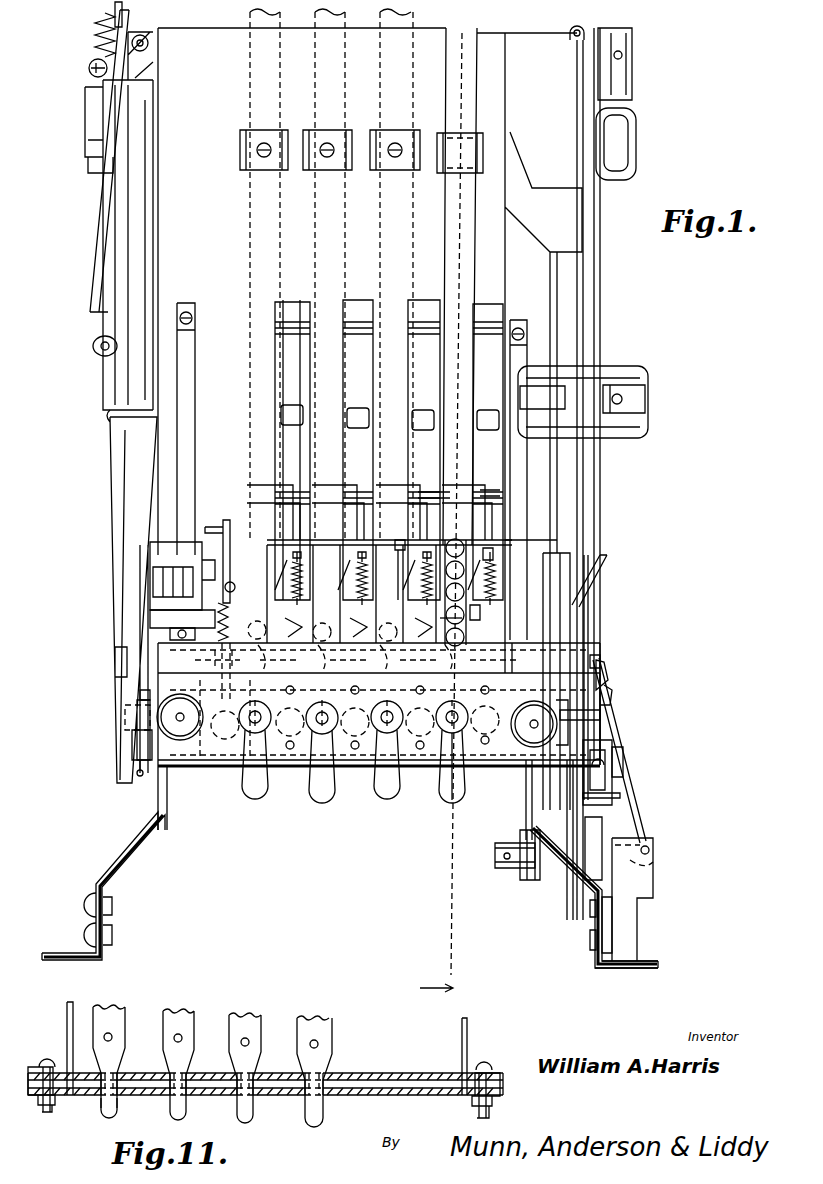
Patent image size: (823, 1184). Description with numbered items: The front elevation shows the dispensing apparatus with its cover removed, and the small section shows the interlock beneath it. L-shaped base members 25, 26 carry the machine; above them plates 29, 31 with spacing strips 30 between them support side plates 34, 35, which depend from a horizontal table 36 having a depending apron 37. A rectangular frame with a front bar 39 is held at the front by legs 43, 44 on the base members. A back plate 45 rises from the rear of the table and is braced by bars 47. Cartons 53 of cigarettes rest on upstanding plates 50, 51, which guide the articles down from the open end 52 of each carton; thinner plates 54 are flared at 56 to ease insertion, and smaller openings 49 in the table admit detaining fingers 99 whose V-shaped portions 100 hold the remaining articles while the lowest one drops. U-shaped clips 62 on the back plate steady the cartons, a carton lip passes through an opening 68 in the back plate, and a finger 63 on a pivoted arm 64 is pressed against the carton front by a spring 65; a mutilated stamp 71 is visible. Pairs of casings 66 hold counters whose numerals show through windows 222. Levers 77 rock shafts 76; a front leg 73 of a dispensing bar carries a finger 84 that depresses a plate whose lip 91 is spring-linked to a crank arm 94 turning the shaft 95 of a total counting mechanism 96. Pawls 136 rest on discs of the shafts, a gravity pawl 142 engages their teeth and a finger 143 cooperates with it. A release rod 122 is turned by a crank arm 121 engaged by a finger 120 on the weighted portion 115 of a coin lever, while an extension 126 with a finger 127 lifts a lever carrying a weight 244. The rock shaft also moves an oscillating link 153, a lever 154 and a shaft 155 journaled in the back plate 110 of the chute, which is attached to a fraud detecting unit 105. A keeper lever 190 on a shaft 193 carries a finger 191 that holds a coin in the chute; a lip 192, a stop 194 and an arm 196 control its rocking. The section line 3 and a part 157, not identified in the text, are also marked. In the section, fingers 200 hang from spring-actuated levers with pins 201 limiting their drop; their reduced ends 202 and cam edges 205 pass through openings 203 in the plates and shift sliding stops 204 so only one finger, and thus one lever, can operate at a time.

In FIG. 1, the section line 3- 3 is at (448, 498).
In FIG. 1, the L-shaped base member 25 is at (86, 915).
In FIG. 1, the L-shaped base member 26 is at (640, 964).
In FIG. 11, the plate 29 is at (427, 1093).
In FIG. 11, the spacing strips 30 is at (410, 1086).
In FIG. 11, the top plate 31 is at (407, 1078).
In FIG. 1, the side plate 34 is at (127, 748).
In FIG. 1, the side plate 35 is at (592, 635).
In FIG. 1, the table 36 is at (379, 704).
In FIG. 1, the depending apron 37 is at (528, 668).
In FIG. 1, the front bar 39 is at (379, 752).
In FIG. 1, the leg 43 is at (135, 855).
In FIG. 1, the leg 44 is at (560, 872).
In FIG. 1, the back plate 45 is at (367, 335).
In FIG. 1, the bars 47 is at (196, 373).
In FIG. 1, the smaller openings 49 is at (510, 540).
In FIG. 1, the upstanding plate 50 is at (480, 636).
In FIG. 1, the upstanding plate 51 is at (322, 617).
In FIG. 1, the open end of carton 52 is at (377, 597).
In FIG. 1, the carton 53 is at (456, 91).
In FIG. 1, the thinner plate 54 is at (480, 618).
In FIG. 1, the flared upper ends 56 is at (393, 572).
In FIG. 1, the U-shaped clips 62 is at (440, 135).
In FIG. 1, the finger 63 is at (443, 503).
In FIG. 1, the pivoted arm 64 is at (488, 492).
In FIG. 1, the spring 65 is at (493, 577).
In FIG. 1, the casings 66 is at (425, 330).
In FIG. 1, the opening 68 is at (250, 498).
In FIG. 1, the stamp 71 is at (440, 503).
In FIG. 1, the front leg 73 is at (539, 712).
In FIG. 1, the shaft 76 is at (353, 747).
In FIG. 1, the levers 77 is at (318, 798).
In FIG. 1, the finger 84 is at (473, 766).
In FIG. 1, the lip 91 is at (394, 658).
In FIG. 1, the crank arm 94 is at (240, 503).
In FIG. 1, the shaft 95 is at (246, 540).
In FIG. 1, the counting mechanism 96 is at (147, 566).
In FIG. 1, the detaining fingers 99 is at (170, 630).
In FIG. 1, the V-shaped portion 100 is at (150, 612).
In FIG. 1, the fraud detecting unit 105 is at (594, 305).
In FIG. 1, the back plate 110 is at (573, 610).
In FIG. 1, the weighted portion 115 is at (610, 780).
In FIG. 1, the finger 120 is at (600, 718).
In FIG. 1, the crank arm 121 is at (607, 700).
In FIG. 1, the release rod 122 is at (379, 658).
In FIG. 1, the extension 126 is at (138, 695).
In FIG. 1, the finger 127 is at (112, 715).
In FIG. 1, the pawls 136 is at (270, 659).
In FIG. 1, the gravity actuated pawl 142 is at (240, 783).
In FIG. 1, the finger 143 is at (218, 780).
In FIG. 1, the oscillating link 153 is at (525, 805).
In FIG. 1, the lever 154 is at (522, 870).
In FIG. 1, the shaft 155 is at (493, 857).
In FIG. 1, the post 157 is at (374, 591).
In FIG. 1, the lever 190 is at (608, 677).
In FIG. 1, the finger 191 is at (595, 660).
In FIG. 1, the lip 192 is at (642, 868).
In FIG. 1, the shaft 193 is at (650, 851).
In FIG. 1, the stop 194 is at (615, 697).
In FIG. 1, the arm 196 is at (615, 790).
In FIG. 11, the depending fingers 200 is at (333, 1019).
In FIG. 11, the pin 201 is at (328, 1040).
In FIG. 11, the reduced lower ends 202 is at (307, 1105).
In FIG. 11, the openings 203 is at (222, 1074).
In FIG. 11, the slidably mounted stops 204 is at (268, 1073).
In FIG. 11, the cam edges 205 is at (298, 1068).
In FIG. 1, the window 222 is at (288, 405).
In FIG. 1, the weight 244 is at (132, 722).